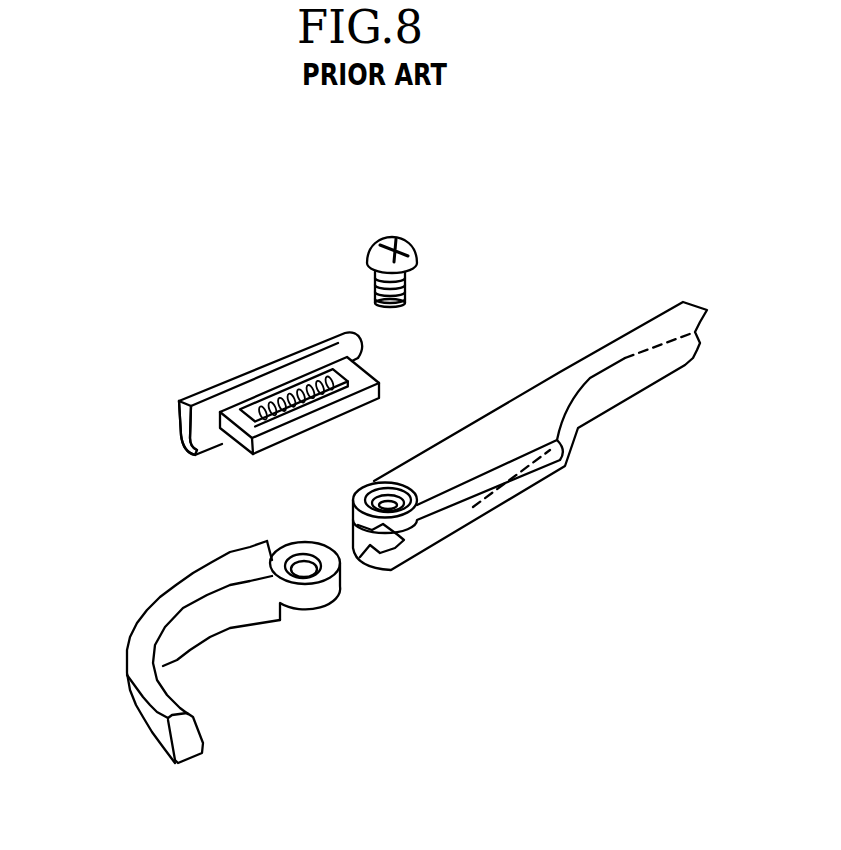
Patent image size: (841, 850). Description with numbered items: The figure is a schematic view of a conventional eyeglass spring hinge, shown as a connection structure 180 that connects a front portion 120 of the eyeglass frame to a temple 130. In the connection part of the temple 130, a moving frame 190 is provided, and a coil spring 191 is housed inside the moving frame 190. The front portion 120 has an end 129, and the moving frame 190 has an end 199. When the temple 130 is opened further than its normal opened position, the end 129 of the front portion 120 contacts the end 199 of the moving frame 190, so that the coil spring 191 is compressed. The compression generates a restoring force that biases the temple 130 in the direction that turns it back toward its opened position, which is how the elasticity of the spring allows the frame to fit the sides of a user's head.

The front portion 120 is at (160, 597).
The end of the front portion 129 is at (266, 553).
The temple 130 is at (603, 346).
The connection structure 180 is at (530, 468).
The moving frame 190 is at (243, 363).
The coil spring 191 is at (317, 377).
The end of the moving frame 199 is at (177, 412).